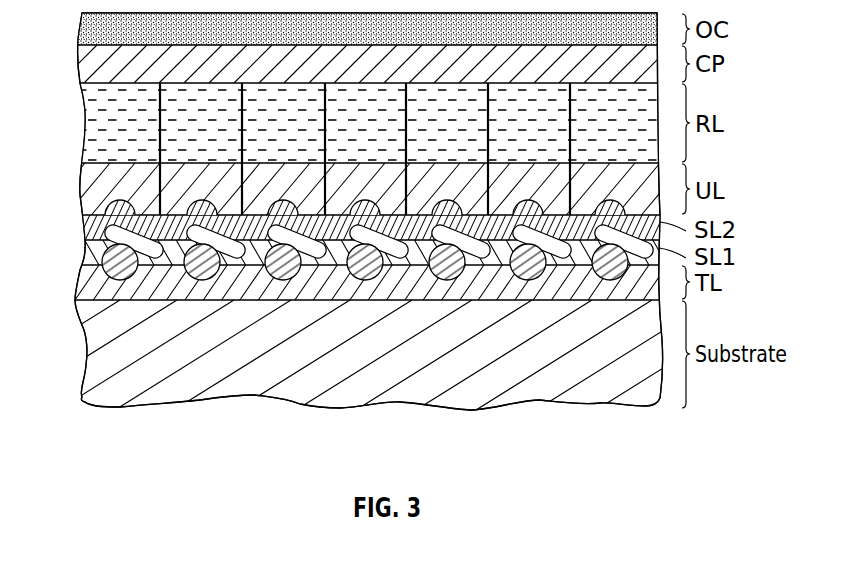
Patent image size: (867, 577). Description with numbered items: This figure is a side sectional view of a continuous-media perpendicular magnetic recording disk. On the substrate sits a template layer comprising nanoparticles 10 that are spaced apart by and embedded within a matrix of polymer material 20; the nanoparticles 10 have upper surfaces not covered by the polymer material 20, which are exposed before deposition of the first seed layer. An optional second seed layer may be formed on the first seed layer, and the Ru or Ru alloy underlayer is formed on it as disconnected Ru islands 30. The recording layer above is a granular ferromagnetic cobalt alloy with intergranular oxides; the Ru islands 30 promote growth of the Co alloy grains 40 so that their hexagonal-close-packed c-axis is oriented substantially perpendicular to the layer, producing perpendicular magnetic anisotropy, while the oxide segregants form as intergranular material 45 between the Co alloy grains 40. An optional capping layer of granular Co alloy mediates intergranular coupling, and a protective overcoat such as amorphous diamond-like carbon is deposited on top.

The nanoparticles 10 is at (96, 251).
The polymer material 20 is at (86, 283).
The Ru islands 30 is at (97, 192).
The Co alloy grains 40 is at (97, 125).
The intergranular material 45 is at (158, 115).